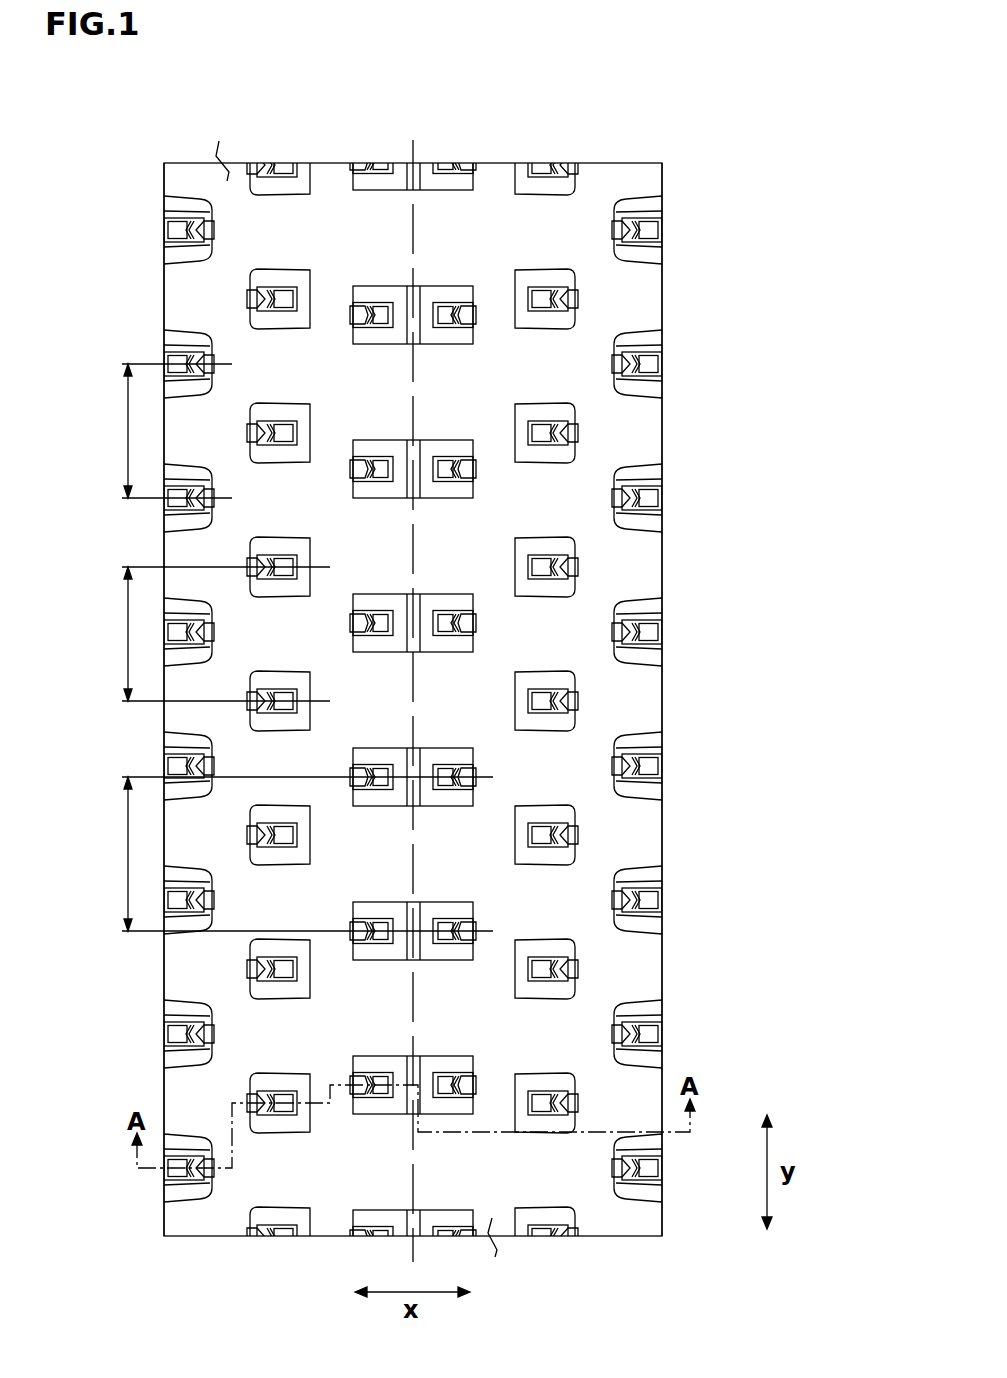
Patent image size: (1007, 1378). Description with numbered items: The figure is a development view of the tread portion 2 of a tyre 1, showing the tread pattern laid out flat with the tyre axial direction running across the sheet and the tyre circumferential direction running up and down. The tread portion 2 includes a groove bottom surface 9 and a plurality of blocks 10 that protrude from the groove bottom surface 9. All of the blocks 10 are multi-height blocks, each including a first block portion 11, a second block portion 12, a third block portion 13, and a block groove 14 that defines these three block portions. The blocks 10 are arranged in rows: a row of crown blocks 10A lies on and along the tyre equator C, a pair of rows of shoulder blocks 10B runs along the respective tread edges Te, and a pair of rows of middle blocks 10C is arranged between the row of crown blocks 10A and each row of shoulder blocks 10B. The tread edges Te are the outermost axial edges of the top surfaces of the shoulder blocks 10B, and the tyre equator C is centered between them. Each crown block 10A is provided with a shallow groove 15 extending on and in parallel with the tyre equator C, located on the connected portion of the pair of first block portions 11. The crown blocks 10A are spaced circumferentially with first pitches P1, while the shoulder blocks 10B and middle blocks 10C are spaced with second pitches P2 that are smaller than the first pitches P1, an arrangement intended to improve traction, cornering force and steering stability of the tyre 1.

The tyre 1 is at (650, 100).
The tread portion 2 is at (568, 133).
The groove bottom surface 9 is at (491, 221).
The blocks 10 is at (728, 1022).
The crown blocks 10A is at (380, 757).
The shoulder blocks 10B is at (190, 342).
The middle blocks 10C is at (273, 545).
The first block portion 11 is at (387, 447).
The second block portion 12 is at (417, 457).
The third block portion 13 is at (359, 462).
The block groove 14 is at (370, 459).
The shallow groove 15 is at (455, 449).
The tread edges Te is at (164, 201).
The tyre equator C is at (411, 686).
The first pitches P1 is at (291, 854).
The second pitches P2 is at (209, 532).